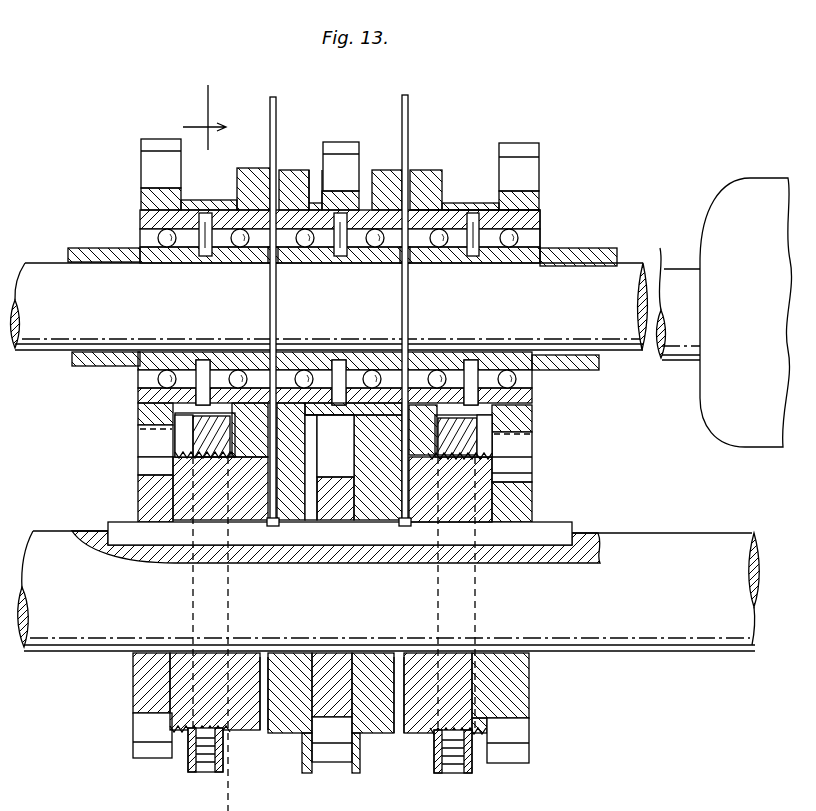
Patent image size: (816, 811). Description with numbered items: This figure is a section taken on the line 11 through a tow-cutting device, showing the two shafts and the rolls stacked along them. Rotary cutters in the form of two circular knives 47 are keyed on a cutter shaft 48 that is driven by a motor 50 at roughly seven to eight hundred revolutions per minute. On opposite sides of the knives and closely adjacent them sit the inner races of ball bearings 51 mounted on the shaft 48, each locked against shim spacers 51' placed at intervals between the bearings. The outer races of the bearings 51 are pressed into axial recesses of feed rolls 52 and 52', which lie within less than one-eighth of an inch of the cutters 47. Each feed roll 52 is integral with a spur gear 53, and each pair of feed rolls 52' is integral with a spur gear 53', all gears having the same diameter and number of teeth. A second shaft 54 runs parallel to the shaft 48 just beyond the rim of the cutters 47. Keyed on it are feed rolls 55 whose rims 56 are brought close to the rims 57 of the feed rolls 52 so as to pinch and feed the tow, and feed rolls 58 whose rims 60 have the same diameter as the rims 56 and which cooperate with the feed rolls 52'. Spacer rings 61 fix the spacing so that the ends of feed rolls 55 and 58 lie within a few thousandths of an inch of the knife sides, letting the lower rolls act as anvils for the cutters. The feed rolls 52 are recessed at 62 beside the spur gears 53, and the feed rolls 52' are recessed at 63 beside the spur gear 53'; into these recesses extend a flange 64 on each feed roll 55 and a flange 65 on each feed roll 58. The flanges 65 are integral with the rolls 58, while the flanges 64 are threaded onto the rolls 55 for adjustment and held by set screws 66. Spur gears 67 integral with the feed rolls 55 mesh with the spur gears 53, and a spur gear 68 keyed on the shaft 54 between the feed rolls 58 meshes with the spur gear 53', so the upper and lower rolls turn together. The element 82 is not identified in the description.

The section line 11 is at (208, 113).
The circular knives 47 is at (275, 100).
The cutter shaft 48 is at (679, 270).
The motor 50 is at (747, 190).
The ball bearings 51 is at (387, 277).
The shim spacers 51' is at (380, 224).
The feed rolls 52 is at (343, 158).
The feed rolls 52' is at (340, 158).
The spur gear 53 is at (341, 154).
The spur gear 53' is at (345, 146).
The second shaft 54 is at (664, 548).
The feed rolls 55 is at (145, 497).
The rims 56 is at (237, 473).
The rims 57 is at (234, 437).
The feed rolls 58 is at (339, 461).
The rims 60 is at (329, 467).
The spacer rings 61 is at (270, 523).
The recess 62 is at (452, 183).
The recess 63 is at (315, 187).
The flange 64 is at (230, 453).
The flange 65 is at (359, 427).
The set screws 66 is at (208, 757).
The spur gears 67 is at (145, 725).
The spur gear 68 is at (335, 507).
The spring slot 82 is at (236, 456).